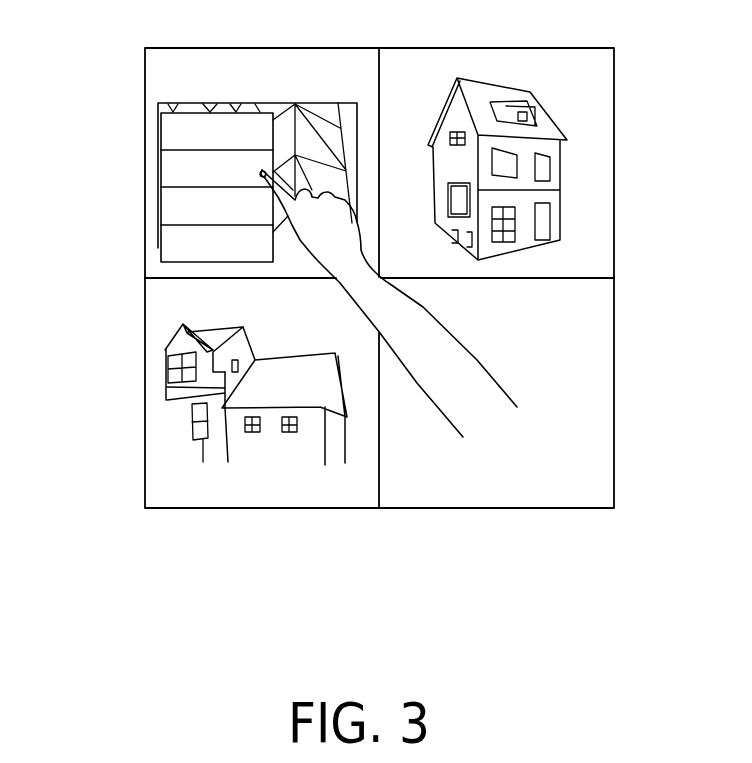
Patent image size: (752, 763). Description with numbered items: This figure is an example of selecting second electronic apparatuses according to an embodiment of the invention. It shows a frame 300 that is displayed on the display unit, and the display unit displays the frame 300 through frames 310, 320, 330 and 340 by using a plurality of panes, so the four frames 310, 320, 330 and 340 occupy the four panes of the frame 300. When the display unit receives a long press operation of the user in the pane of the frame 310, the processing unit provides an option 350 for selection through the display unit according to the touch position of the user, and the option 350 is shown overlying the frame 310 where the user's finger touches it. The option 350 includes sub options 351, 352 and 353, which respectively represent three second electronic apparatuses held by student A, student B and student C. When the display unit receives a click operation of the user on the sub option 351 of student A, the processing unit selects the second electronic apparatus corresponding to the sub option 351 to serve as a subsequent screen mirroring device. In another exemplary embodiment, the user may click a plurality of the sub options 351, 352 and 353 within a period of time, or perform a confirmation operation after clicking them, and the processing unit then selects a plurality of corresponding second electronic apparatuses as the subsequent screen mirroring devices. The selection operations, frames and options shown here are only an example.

The frame 300 is at (145, 427).
The frame 310 is at (160, 76).
The frame 320 is at (597, 82).
The frame 330 is at (157, 322).
The frame 340 is at (597, 362).
The option 350 is at (164, 194).
The sub option 351 is at (161, 172).
The sub option 352 is at (161, 207).
The sub option 353 is at (161, 246).